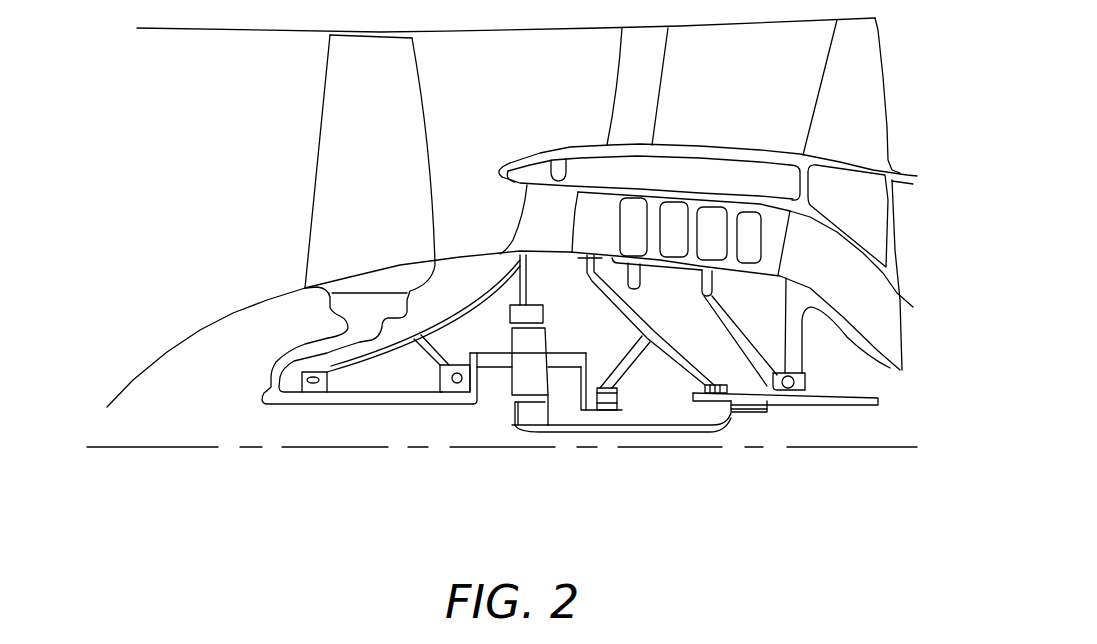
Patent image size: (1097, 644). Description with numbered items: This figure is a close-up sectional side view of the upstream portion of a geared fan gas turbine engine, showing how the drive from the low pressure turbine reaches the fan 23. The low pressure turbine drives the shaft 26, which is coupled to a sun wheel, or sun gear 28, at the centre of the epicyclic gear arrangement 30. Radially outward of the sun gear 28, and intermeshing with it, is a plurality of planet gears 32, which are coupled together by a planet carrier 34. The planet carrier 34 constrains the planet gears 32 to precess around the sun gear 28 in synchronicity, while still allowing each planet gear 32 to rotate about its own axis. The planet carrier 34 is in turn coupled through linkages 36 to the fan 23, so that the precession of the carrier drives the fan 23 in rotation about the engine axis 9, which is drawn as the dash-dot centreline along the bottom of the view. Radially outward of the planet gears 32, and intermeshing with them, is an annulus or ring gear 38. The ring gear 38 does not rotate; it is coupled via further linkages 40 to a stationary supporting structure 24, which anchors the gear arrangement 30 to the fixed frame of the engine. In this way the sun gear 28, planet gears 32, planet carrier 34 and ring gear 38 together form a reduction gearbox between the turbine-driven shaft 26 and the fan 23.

The engine axis 9 is at (200, 455).
The fan 23 is at (345, 162).
The stationary supporting structure 24 is at (532, 210).
The shaft 26 is at (655, 425).
The sun gear 28 is at (530, 413).
The epicyclic gear arrangement 30 is at (498, 397).
The planet gears 32 is at (518, 385).
The planet carrier 34 is at (579, 379).
The linkages 36 is at (485, 387).
The ring gear 38 is at (533, 315).
The linkages 40 is at (528, 286).